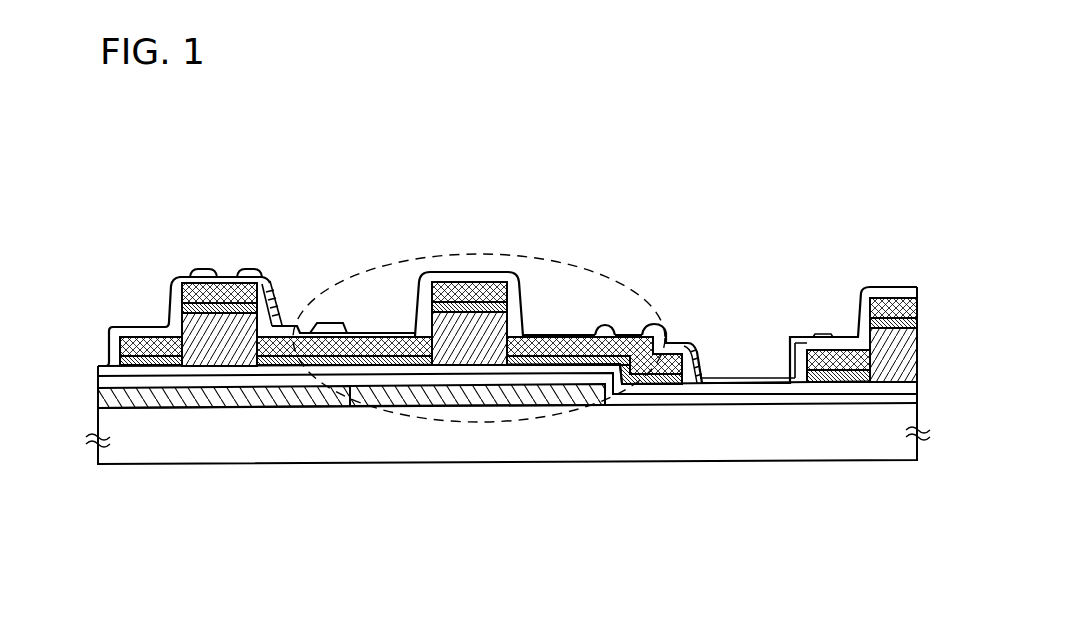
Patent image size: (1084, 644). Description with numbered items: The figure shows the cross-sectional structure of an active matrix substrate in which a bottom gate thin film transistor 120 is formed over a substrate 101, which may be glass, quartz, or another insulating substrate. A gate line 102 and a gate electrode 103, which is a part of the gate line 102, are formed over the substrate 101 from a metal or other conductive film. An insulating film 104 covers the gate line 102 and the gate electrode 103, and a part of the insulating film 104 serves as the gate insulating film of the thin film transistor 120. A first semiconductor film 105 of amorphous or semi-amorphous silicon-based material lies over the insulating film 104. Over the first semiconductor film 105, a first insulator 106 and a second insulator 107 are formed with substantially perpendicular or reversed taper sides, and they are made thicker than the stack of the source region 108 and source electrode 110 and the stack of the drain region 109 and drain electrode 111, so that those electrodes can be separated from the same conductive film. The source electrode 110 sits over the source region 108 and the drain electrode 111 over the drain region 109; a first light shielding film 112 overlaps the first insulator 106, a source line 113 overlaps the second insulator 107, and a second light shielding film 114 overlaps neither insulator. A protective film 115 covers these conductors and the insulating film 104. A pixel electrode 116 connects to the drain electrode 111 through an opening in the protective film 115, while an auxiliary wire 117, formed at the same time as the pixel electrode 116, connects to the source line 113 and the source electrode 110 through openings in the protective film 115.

The substrate 101 is at (247, 456).
The gate line 102 is at (188, 398).
The gate electrode 103 is at (477, 397).
The insulating film 104 is at (833, 397).
The first semiconductor film 105 is at (283, 372).
The first insulator 106 is at (475, 240).
The second insulator 107 is at (222, 332).
The source region 108 is at (363, 332).
The drain region 109 is at (630, 330).
The source electrode 110 is at (413, 338).
The drain electrode 111 is at (565, 340).
The first light shielding film 112 is at (492, 283).
The source line 113 is at (172, 280).
The second light shielding film 114 is at (152, 365).
The protective film 115 is at (755, 387).
The pixel electrode 116 is at (720, 381).
The auxiliary wire 117 is at (230, 280).
The bottom gate thin film transistor 120 is at (513, 421).